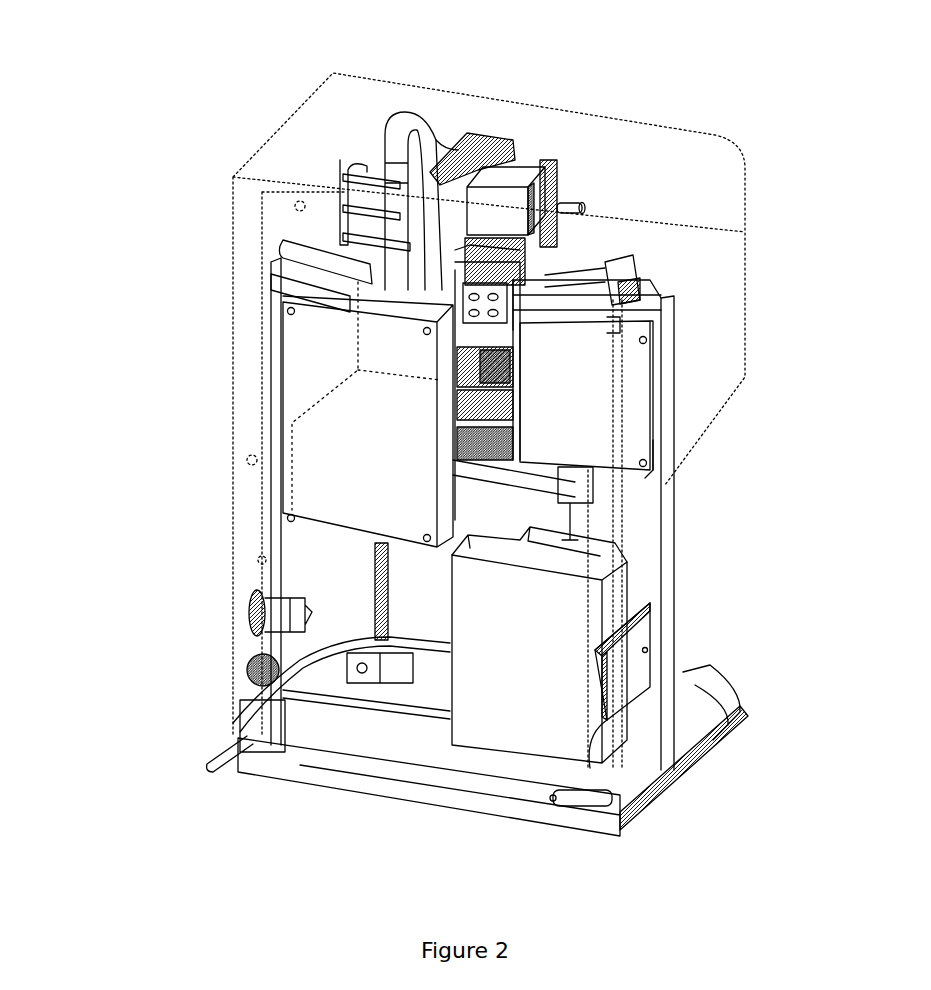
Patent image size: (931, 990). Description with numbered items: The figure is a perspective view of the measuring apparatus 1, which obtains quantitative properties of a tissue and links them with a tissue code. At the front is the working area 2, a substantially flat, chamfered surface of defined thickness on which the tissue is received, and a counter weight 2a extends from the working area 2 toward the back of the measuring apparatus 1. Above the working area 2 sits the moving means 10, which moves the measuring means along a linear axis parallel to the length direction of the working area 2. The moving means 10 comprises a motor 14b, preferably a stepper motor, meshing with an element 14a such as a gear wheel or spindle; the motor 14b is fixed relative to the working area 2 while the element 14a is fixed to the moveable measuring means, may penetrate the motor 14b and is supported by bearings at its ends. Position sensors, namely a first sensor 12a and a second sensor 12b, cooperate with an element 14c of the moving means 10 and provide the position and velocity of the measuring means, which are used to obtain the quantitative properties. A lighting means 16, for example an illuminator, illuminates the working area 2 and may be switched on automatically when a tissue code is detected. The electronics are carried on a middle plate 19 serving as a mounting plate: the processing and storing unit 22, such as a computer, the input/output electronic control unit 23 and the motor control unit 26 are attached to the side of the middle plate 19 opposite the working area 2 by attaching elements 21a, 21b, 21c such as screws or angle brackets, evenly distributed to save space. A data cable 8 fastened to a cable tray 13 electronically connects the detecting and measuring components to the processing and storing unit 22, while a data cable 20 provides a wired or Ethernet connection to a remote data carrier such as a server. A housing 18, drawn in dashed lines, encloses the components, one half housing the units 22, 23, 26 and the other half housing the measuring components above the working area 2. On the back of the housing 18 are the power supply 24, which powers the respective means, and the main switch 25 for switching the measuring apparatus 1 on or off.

The measuring apparatus 1 is at (122, 90).
The working area 2 is at (690, 673).
The counter weight 2a is at (487, 800).
The data cable 8 is at (380, 150).
The moving means 10 is at (527, 170).
The first sensor 12a is at (633, 257).
The second sensor 12b is at (460, 265).
The cable tray 13 is at (473, 125).
The element 14a is at (580, 207).
The motor 14b is at (458, 148).
The element 14c is at (545, 192).
The lighting means 16 is at (455, 455).
The housing 18 is at (233, 227).
The middle plate 19 is at (645, 565).
The data cable 20 is at (330, 660).
The attaching element 21a is at (653, 455).
The attaching element 21b is at (622, 814).
The attaching element 21c is at (440, 297).
The processing and storing unit 22 is at (551, 647).
The input/output electronic control unit 23 is at (305, 365).
The power supply 24 is at (232, 686).
The main switch 25 is at (250, 612).
The motor control unit 26 is at (653, 430).